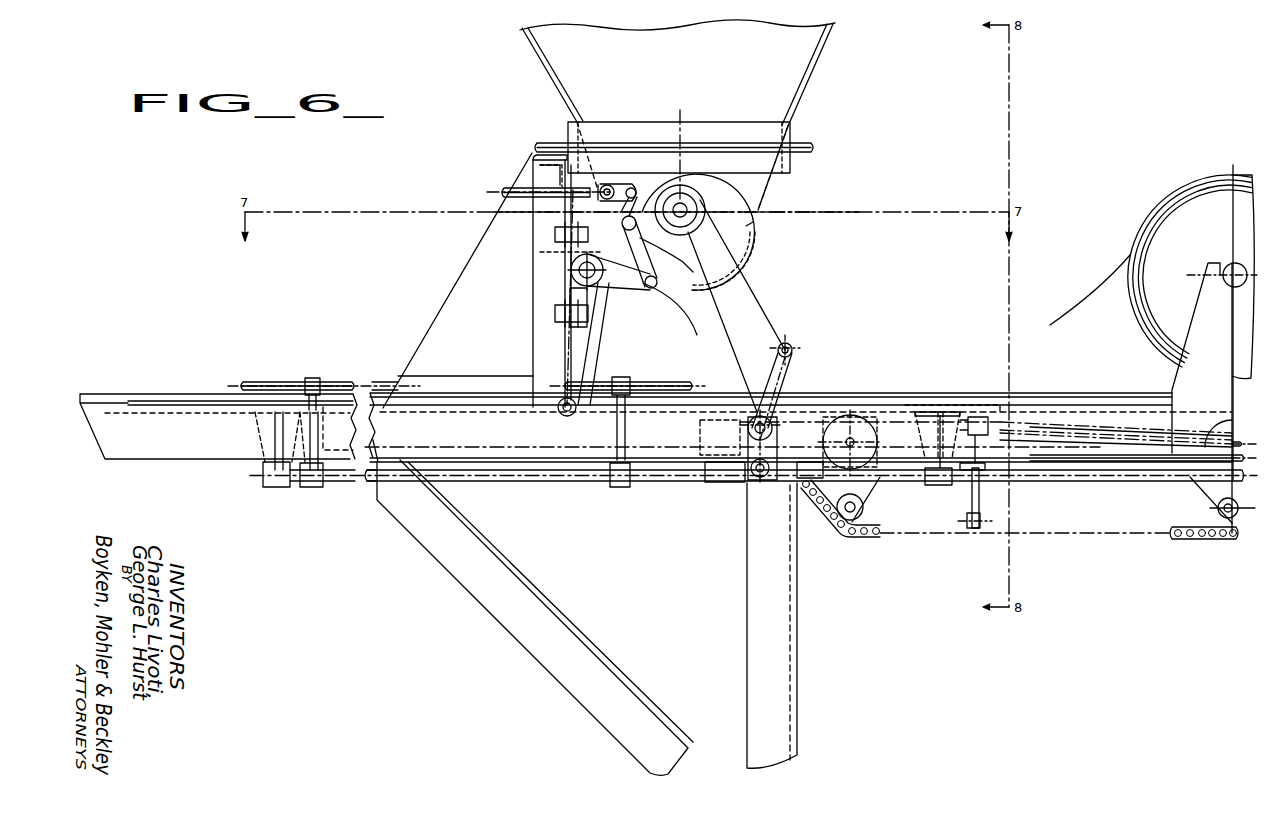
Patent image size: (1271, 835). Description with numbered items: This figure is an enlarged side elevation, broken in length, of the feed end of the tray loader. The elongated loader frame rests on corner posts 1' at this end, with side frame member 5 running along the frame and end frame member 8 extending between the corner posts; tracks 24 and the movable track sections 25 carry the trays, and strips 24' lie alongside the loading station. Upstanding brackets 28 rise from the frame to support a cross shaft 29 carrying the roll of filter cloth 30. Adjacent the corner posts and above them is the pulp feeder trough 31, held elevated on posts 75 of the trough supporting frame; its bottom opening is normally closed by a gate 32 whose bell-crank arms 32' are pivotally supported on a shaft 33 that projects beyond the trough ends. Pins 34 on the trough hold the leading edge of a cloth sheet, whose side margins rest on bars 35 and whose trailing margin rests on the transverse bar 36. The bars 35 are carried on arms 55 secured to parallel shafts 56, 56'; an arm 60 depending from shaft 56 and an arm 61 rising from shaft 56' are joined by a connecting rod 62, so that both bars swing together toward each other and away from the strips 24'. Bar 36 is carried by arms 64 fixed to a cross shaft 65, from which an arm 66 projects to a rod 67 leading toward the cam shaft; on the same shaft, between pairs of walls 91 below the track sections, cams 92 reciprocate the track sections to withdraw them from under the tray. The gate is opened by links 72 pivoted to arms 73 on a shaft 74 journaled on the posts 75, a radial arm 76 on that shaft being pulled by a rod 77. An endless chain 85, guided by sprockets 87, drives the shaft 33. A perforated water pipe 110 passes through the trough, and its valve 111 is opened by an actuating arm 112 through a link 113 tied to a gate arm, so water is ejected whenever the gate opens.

The corner posts 1' is at (785, 625).
The side frame member 5 is at (172, 454).
The end frame member 8 is at (891, 404).
The tracks 24 is at (976, 388).
The strips 24' is at (940, 411).
The track sections 25 is at (508, 440).
The upstanding brackets 28 is at (1177, 378).
The cross shaft 29 is at (1226, 277).
The roll of filter cloth 30 is at (1197, 179).
The trough 31 is at (765, 189).
The gate 32 is at (712, 293).
The arms 32' is at (766, 224).
The shaft 33 is at (690, 205).
The pins 34 is at (583, 248).
The bars 35 is at (345, 381).
The transverse bar 36 is at (793, 348).
The arms 55 is at (310, 488).
The shaft 56 is at (753, 490).
The shaft 56' is at (1143, 476).
The arm 60 is at (980, 497).
The arm 61 is at (985, 415).
The connecting rod 62 is at (990, 521).
The arms 64 is at (790, 377).
The cross shaft 65 is at (745, 405).
The arm 66 is at (750, 472).
The rod 67 is at (915, 486).
The links 72 is at (663, 280).
The arms 73 is at (612, 297).
The shaft 74 is at (574, 273).
The posts 75 is at (535, 316).
The arm 76 is at (589, 347).
The rod 77 is at (1128, 447).
The endless chain 85 is at (869, 540).
The guide sprockets 87 is at (880, 486).
The walls 91 is at (735, 433).
The cam 92 is at (720, 470).
The pipe 110 is at (520, 187).
The valve 111 is at (608, 185).
The actuating arm 112 is at (624, 188).
The link 113 is at (556, 224).